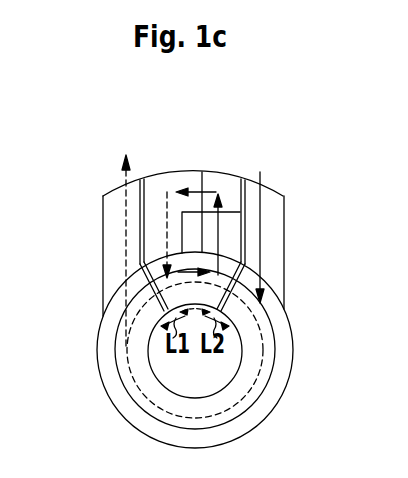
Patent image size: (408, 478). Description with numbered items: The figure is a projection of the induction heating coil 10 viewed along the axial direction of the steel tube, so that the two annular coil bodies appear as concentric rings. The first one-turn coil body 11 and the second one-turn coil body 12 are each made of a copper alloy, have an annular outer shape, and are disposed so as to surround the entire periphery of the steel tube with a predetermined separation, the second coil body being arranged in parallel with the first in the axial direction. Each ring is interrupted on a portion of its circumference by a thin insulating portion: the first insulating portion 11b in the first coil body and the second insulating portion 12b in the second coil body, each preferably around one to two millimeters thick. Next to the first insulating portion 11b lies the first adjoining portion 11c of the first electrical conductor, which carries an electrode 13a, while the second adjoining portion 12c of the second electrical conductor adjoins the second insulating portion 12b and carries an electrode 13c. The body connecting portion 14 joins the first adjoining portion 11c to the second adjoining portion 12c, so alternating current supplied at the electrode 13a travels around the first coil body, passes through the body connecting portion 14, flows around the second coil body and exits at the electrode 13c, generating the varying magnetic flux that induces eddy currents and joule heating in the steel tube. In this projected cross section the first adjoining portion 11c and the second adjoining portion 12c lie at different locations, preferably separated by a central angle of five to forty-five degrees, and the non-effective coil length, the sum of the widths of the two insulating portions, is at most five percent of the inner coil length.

The induction heating coil 10 is at (238, 158).
The first 1-turn coil body 11 is at (273, 408).
The first insulating portion 11b is at (224, 310).
The first adjoining portion 11c is at (247, 256).
The second 1-turn coil body 12 is at (241, 361).
The second insulating portion 12b is at (164, 306).
The second adjoining portion 12c is at (125, 261).
The electrode 13a is at (285, 225).
The electrode 13c is at (103, 226).
The body connecting portion 14 is at (191, 175).